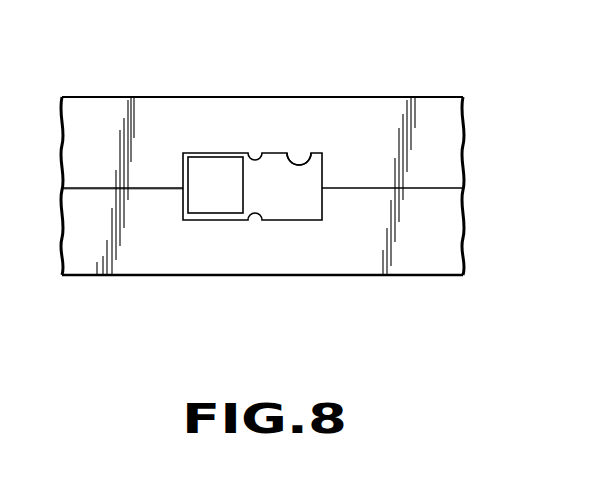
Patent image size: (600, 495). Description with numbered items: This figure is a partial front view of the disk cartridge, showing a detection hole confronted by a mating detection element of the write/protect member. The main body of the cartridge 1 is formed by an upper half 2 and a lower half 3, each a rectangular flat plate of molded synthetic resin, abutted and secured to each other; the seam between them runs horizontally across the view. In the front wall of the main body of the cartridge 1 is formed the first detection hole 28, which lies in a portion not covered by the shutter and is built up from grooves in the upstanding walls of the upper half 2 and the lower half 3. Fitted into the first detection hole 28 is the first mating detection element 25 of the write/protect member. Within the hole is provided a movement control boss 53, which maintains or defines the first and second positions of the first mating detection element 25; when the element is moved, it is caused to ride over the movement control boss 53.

The main body of the cartridge 1 is at (527, 122).
The upper half 2 is at (445, 153).
The lower half 3 is at (442, 237).
The first mating detection element 25 is at (215, 180).
The first detection hole 28 is at (312, 153).
The movement control boss 53 is at (257, 153).